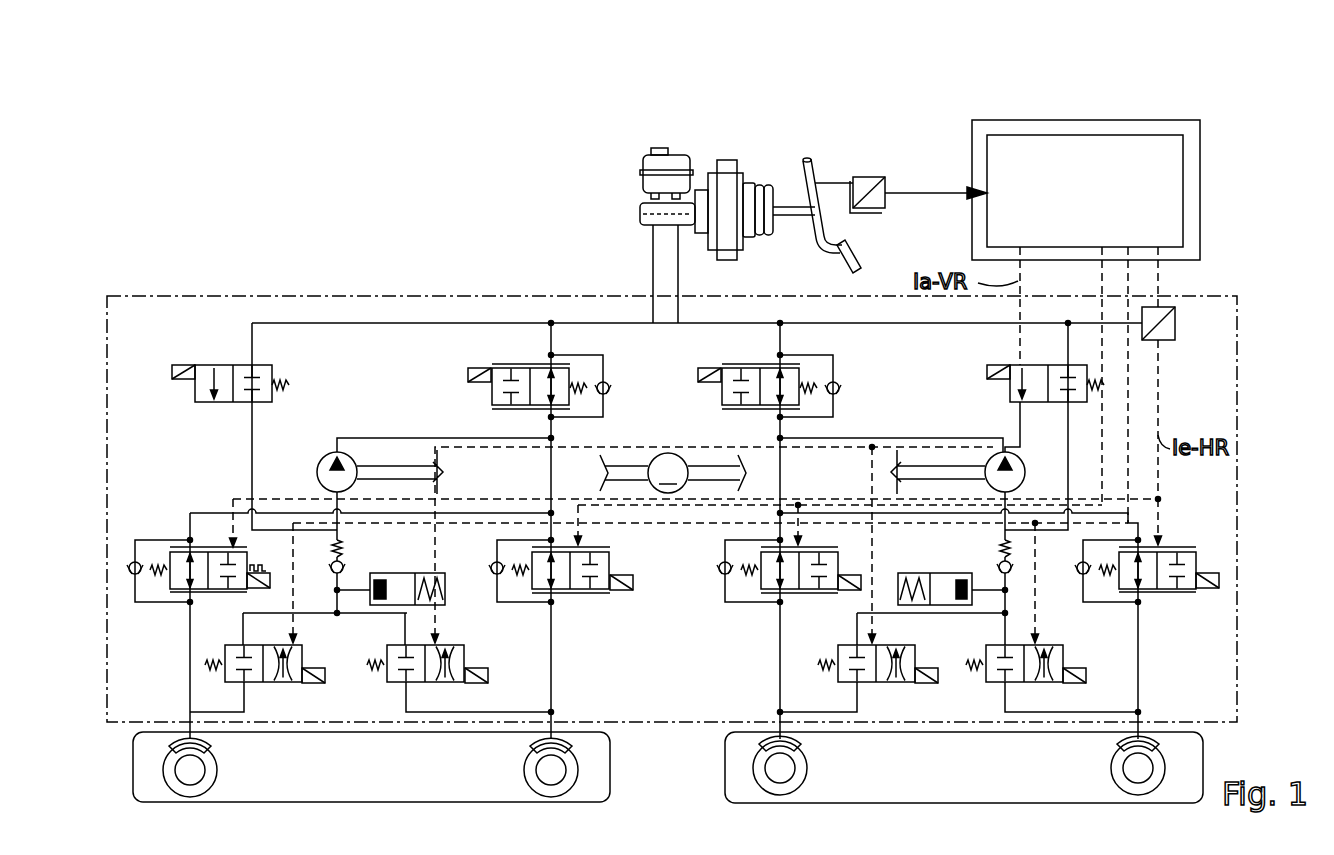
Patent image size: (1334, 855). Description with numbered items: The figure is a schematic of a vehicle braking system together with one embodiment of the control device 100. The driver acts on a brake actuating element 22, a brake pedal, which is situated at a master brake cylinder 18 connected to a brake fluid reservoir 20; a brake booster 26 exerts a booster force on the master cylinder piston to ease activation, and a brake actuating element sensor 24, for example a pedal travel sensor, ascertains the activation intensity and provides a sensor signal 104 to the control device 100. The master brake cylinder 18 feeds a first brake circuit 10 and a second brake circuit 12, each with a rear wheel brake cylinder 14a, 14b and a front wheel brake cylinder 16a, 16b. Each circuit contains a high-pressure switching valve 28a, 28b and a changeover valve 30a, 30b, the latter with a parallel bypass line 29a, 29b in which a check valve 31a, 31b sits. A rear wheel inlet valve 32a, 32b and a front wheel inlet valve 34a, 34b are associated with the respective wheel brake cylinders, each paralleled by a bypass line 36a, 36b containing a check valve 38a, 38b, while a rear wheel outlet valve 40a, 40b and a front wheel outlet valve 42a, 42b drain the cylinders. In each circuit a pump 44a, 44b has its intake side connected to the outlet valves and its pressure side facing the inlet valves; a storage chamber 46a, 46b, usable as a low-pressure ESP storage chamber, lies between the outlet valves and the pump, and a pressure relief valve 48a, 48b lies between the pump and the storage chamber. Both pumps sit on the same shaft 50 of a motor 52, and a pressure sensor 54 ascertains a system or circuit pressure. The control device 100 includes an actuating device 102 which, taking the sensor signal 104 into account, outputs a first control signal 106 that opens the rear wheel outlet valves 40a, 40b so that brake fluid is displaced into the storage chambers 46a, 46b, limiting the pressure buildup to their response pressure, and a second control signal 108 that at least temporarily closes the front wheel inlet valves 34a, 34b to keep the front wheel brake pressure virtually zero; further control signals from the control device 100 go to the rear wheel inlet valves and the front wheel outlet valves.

The first brake circuit 10 is at (758, 666).
The second brake circuit 12 is at (575, 668).
The rear wheel brake cylinder 14a is at (1124, 743).
The rear wheel brake cylinder 14b is at (206, 745).
The front wheel brake cylinder 16a is at (795, 743).
The front wheel brake cylinder 16b is at (537, 742).
The master brake cylinder 18 is at (640, 214).
The brake fluid reservoir 20 is at (683, 156).
The brake actuating element 22 is at (838, 228).
The brake actuating element sensor 24 is at (862, 177).
The brake booster 26 is at (743, 250).
The high-pressure switching valve 28a is at (1010, 396).
The high-pressure switching valve 28b is at (195, 396).
The bypass line 29a is at (812, 417).
The bypass line 29b is at (597, 417).
The changeover valve 30a is at (722, 398).
The changeover valve 30b is at (492, 398).
The check valve 31a is at (840, 386).
The check valve 31b is at (610, 386).
The rear wheel inlet valve 32a is at (1180, 594).
The rear wheel inlet valve 32b is at (218, 547).
The front wheel inlet valve 34a is at (807, 594).
The front wheel inlet valve 34b is at (586, 594).
The bypass line 36a is at (725, 592).
The bypass line 36b is at (150, 603).
The check valve 38a is at (718, 566).
The check valve 38b is at (134, 561).
The rear wheel outlet valve 40a is at (1052, 683).
The rear wheel outlet valve 40b is at (300, 683).
The front wheel outlet valve 42a is at (912, 683).
The front wheel outlet valve 42b is at (455, 683).
The pump 44a is at (1018, 461).
The pump 44b is at (324, 460).
The storage chamber 46a is at (912, 573).
The storage chamber 46b is at (428, 573).
The pressure relief valve 48a is at (1000, 566).
The pressure relief valve 48b is at (344, 567).
The shaft 50 is at (718, 478).
The motor 52 is at (640, 482).
The pressure sensor 54 is at (1175, 324).
The control device 100 is at (1200, 222).
The actuating device 102 is at (1108, 135).
The sensor signal 104 is at (947, 192).
The first control signal 106 is at (1128, 373).
The second control signal 108 is at (1102, 283).